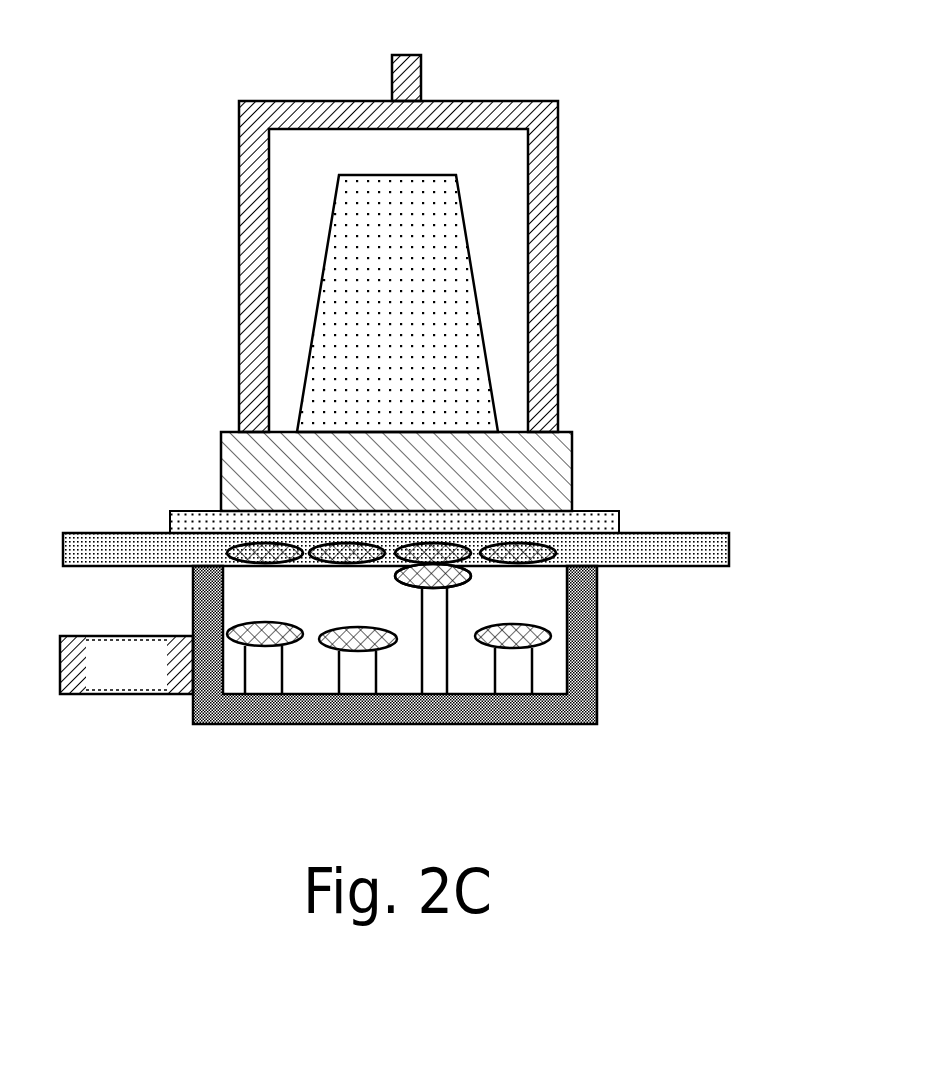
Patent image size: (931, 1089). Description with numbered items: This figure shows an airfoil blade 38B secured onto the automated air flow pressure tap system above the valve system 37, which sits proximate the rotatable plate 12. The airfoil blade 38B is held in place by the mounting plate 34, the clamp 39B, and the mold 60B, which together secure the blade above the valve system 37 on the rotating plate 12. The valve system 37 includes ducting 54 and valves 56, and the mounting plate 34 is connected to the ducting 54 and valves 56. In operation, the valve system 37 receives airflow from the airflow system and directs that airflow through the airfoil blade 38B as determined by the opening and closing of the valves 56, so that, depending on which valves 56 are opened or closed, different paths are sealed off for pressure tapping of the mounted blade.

The clamp 39B is at (510, 110).
The airfoil blade 38B is at (397, 303).
The mold 60B is at (396, 471).
The mounting plate 34 is at (602, 520).
The rotatable plate 12 is at (693, 548).
The valve system 37 is at (632, 653).
The valves 56 is at (267, 668).
The ducting 54 is at (126, 665).